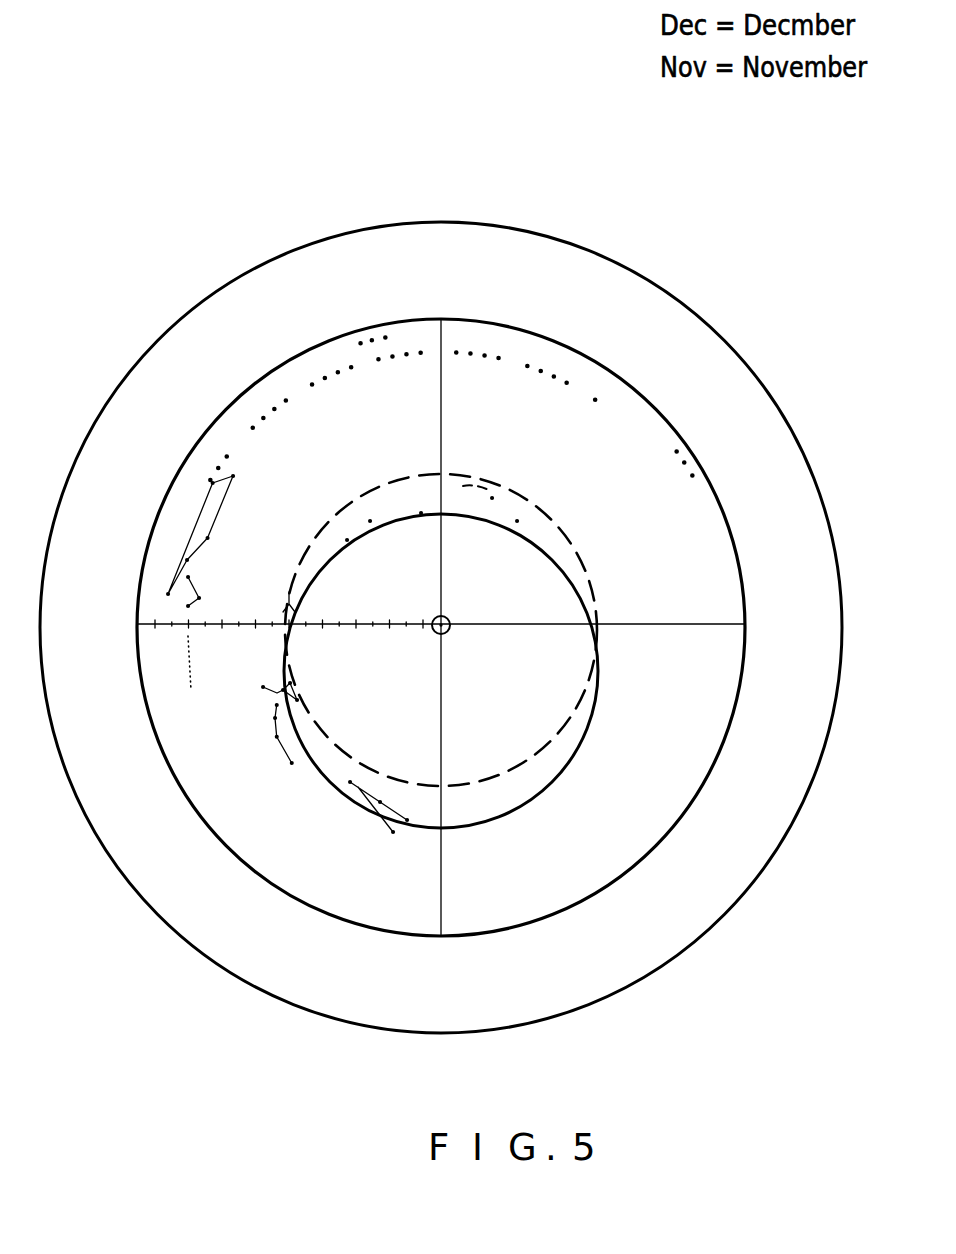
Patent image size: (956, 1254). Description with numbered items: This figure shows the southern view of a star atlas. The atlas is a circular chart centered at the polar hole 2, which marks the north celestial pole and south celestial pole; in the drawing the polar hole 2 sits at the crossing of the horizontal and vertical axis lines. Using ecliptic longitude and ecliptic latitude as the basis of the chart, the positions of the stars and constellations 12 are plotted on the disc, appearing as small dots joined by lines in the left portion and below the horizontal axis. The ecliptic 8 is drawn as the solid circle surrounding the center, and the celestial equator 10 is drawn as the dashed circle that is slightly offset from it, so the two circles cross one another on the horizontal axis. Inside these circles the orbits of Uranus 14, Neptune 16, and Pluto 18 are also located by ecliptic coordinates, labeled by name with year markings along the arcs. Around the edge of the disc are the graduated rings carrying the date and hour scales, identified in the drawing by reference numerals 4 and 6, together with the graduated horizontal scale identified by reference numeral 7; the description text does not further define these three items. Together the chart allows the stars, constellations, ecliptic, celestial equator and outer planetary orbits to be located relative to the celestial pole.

The polar hole 2 is at (450, 618).
The date scale ring 4 is at (655, 437).
The sidereal hour scale ring 6 is at (568, 405).
The distance scale axis 7 is at (245, 612).
The ecliptic 8 is at (597, 707).
The celestial equator 10 is at (582, 566).
The stars and constellations 12 is at (233, 489).
The orbit of Uranus 14 is at (370, 556).
The orbit of Neptune 16 is at (403, 481).
The orbit of Pluto 18 is at (514, 499).